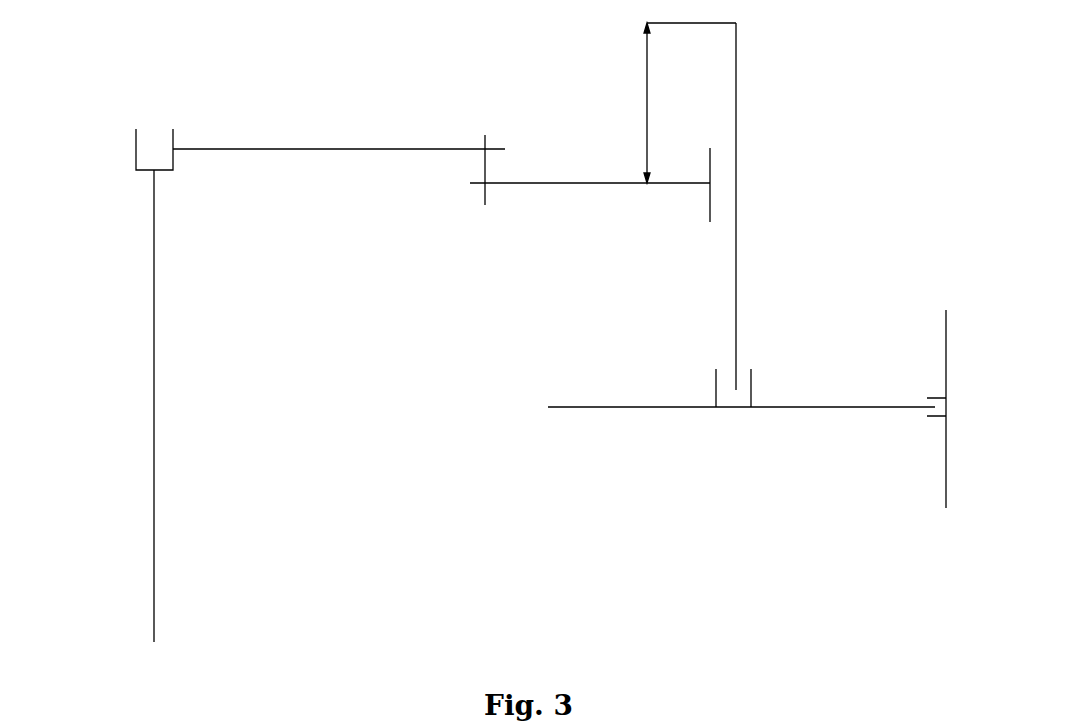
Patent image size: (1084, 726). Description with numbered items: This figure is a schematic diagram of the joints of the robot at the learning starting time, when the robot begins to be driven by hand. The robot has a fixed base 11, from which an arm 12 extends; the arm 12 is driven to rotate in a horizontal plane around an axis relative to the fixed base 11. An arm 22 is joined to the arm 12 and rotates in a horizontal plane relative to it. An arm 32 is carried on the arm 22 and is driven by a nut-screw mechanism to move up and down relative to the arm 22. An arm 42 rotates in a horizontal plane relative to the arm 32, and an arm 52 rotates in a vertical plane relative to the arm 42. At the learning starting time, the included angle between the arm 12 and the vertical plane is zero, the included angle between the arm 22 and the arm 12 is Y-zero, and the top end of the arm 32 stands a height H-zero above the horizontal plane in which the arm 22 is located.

The fixed base 11 is at (154, 407).
The arm 12 is at (339, 149).
The arm 22 is at (590, 183).
The arm 32 is at (736, 205).
The arm 42 is at (640, 407).
The arm 52 is at (946, 358).